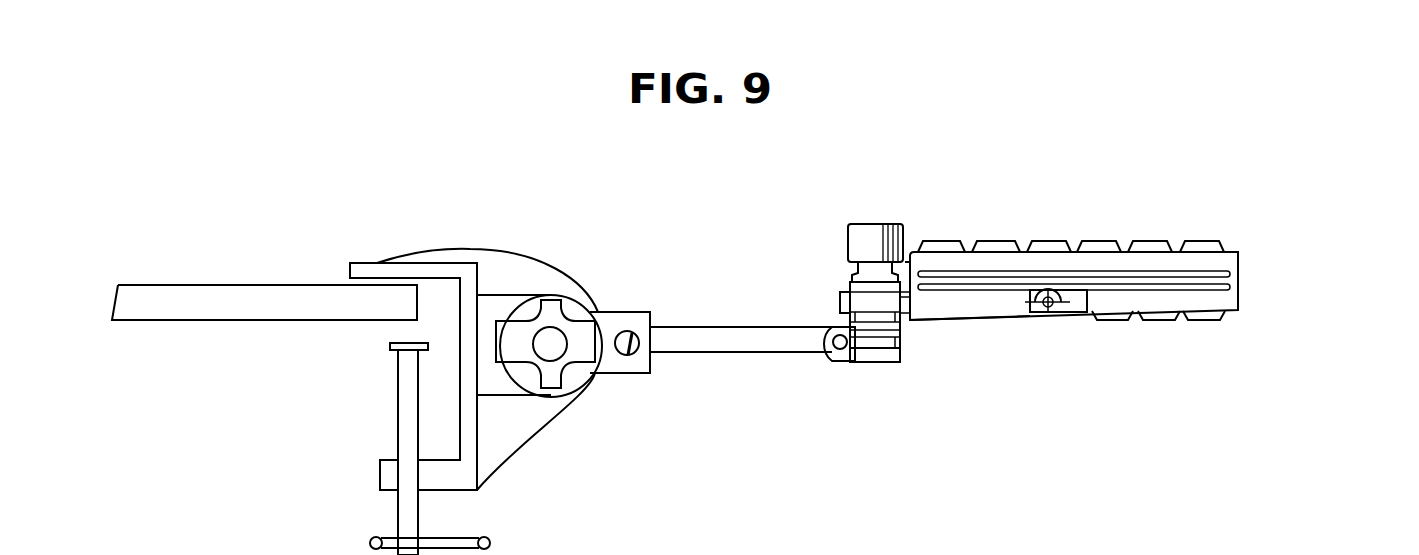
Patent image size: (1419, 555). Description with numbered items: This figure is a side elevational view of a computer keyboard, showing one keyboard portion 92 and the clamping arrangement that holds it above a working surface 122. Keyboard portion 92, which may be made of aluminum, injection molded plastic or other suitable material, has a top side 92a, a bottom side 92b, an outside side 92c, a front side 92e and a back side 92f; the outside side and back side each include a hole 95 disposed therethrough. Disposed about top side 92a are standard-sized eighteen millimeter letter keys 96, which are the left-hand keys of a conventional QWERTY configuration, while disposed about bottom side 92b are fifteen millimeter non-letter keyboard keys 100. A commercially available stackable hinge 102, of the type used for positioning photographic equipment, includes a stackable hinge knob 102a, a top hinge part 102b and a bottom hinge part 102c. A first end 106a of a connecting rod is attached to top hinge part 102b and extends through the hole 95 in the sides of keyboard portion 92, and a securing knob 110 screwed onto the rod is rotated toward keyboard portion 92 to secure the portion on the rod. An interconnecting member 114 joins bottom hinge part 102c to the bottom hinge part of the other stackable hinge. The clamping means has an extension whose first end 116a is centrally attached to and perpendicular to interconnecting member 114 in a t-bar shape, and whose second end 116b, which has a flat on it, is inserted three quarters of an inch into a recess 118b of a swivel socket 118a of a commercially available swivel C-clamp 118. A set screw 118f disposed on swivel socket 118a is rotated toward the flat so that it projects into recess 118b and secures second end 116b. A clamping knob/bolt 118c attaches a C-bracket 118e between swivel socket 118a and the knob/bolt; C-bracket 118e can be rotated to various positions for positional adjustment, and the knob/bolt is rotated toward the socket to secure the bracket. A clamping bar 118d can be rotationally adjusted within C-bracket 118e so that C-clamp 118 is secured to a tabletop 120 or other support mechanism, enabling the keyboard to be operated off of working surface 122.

The keyboard portion 92 is at (1012, 317).
The top side 92a is at (1222, 260).
The bottom side 92b is at (1075, 312).
The outside side 92c is at (962, 306).
The front side 92e is at (1238, 263).
The back side 92f is at (905, 262).
The hole 95 is at (1060, 312).
The letter keys 96 is at (1043, 240).
The non-letter keyboard keys 100 is at (1202, 320).
The stackable hinge 102 is at (903, 338).
The stackable hinge knob 102a is at (860, 237).
The top hinge part 102b is at (853, 282).
The bottom hinge part 102c is at (865, 353).
The first end of connecting rod 106a is at (840, 305).
The securing knob 110 is at (1048, 317).
The interconnecting member 114 is at (840, 349).
The first end of extension 116a is at (830, 347).
The second end of extension 116b is at (652, 328).
The swivel C-clamp 118 is at (512, 273).
The swivel socket 118a is at (615, 312).
The recess 118b is at (653, 355).
The clamping knob/bolt 118c is at (548, 377).
The clamping bar 118d is at (405, 383).
The C-bracket 118e is at (378, 270).
The set screw 118f is at (627, 356).
The tabletop 120 is at (197, 313).
The working surface 122 is at (225, 283).